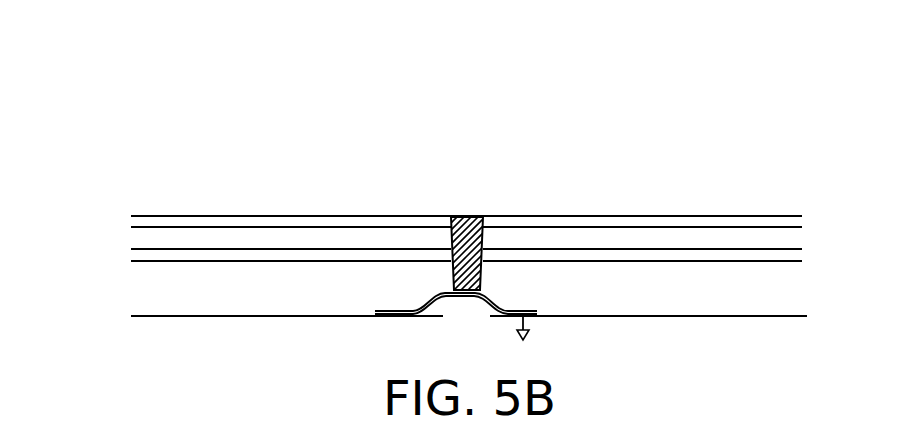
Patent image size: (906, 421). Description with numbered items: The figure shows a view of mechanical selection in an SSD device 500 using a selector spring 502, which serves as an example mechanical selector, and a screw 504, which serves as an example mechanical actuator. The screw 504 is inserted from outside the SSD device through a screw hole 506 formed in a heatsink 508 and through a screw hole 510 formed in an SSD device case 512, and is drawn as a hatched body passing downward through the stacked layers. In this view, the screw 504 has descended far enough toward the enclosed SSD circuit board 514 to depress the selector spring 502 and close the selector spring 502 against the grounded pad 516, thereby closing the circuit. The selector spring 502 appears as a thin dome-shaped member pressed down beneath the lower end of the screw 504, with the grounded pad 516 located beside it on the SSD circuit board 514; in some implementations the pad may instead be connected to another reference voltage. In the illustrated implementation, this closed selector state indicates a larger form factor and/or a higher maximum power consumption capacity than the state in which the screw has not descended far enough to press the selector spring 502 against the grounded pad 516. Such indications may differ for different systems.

The sensor device 500 is at (260, 148).
The selector spring 502 is at (442, 291).
The screw 504 is at (452, 216).
The screw hole 506 is at (496, 205).
The heatsink 508 is at (145, 215).
The screw hole 510 is at (504, 266).
The SSD device case 512 is at (141, 249).
The SSD circuit board 514 is at (143, 316).
The grounded pad 516 is at (536, 313).